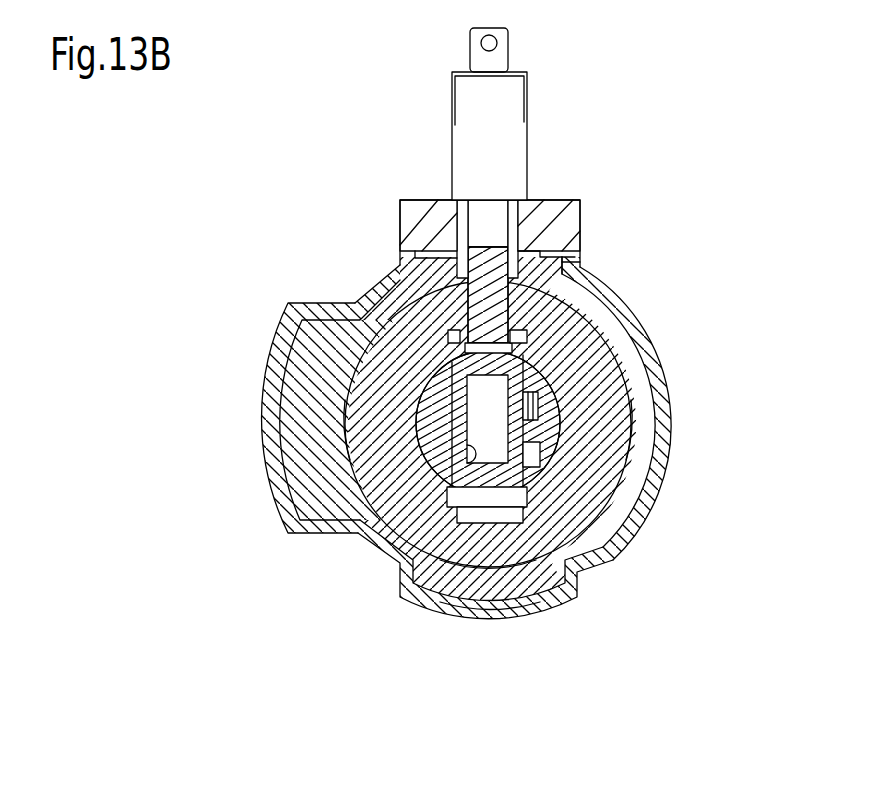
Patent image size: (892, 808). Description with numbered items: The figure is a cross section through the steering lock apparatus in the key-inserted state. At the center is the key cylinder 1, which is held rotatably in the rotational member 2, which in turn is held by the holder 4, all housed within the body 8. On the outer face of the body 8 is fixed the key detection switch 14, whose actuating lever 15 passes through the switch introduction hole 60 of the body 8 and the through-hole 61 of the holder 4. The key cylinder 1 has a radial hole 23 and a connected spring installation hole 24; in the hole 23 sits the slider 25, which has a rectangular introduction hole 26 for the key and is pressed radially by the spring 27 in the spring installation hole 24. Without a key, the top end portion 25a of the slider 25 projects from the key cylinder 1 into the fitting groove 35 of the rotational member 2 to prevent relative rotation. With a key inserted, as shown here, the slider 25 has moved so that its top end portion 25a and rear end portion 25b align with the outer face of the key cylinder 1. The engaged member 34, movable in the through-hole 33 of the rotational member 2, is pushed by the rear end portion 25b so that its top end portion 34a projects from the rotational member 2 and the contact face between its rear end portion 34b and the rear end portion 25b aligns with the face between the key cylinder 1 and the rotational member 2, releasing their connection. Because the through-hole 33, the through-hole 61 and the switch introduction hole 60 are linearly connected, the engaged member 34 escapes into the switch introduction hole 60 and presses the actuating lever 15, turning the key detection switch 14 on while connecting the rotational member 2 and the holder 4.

The key cylinder 1 is at (310, 303).
The rotational member 2 is at (298, 526).
The holder 4 is at (450, 583).
The body 8 is at (490, 615).
The key detection switch 14 is at (503, 98).
The actuating lever 15 is at (495, 218).
The hole 23 is at (400, 297).
The spring installation hole 24 is at (548, 395).
The slider 25 is at (458, 432).
The top end portion 25a is at (425, 538).
The rear end portion 25b is at (532, 345).
The rectangular introduction hole 26 is at (462, 465).
The spring 27 is at (548, 452).
The through-hole 33 is at (572, 270).
The engaged member 34 is at (400, 252).
The top end portion 34a is at (522, 240).
The rear end portion 34b is at (545, 298).
The fitting groove 35 is at (585, 548).
The switch introduction hole 60 is at (466, 212).
The through-hole 61 is at (567, 252).